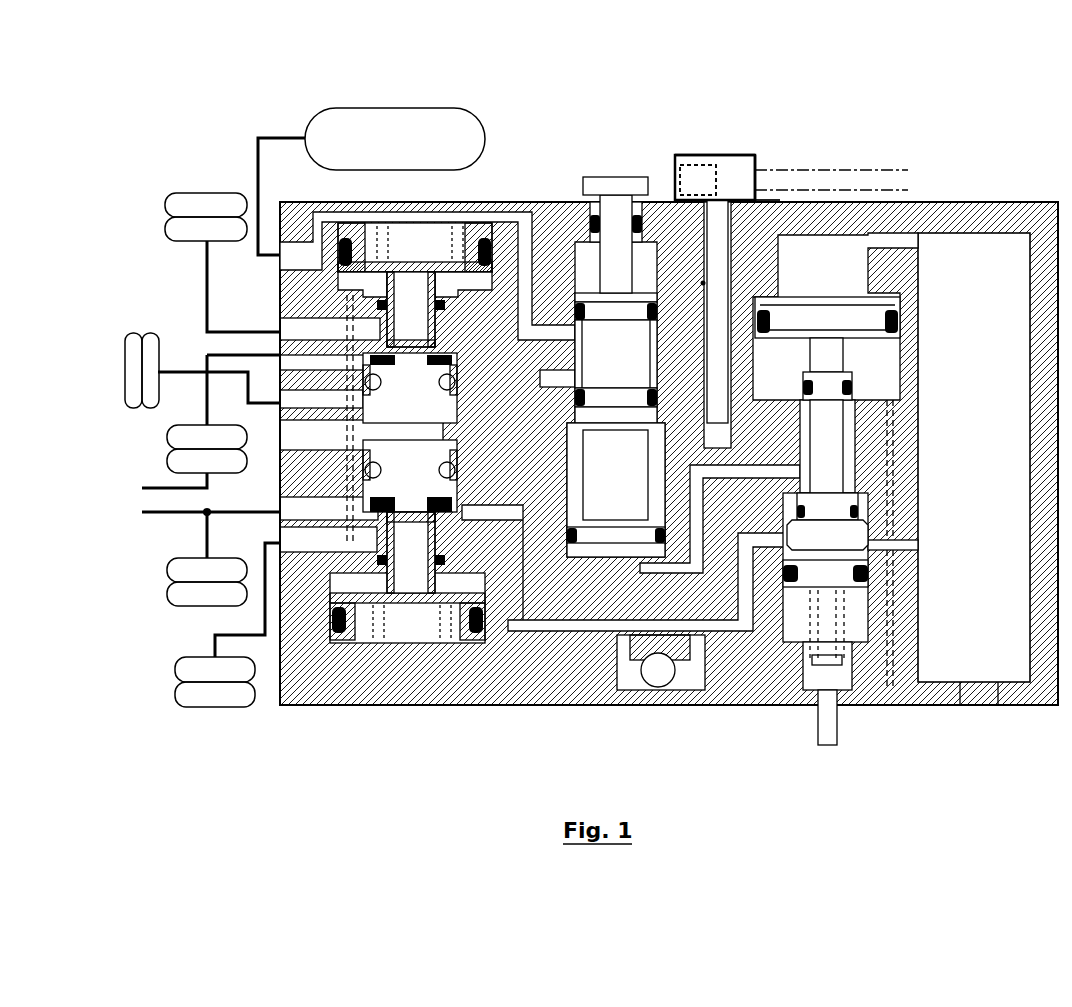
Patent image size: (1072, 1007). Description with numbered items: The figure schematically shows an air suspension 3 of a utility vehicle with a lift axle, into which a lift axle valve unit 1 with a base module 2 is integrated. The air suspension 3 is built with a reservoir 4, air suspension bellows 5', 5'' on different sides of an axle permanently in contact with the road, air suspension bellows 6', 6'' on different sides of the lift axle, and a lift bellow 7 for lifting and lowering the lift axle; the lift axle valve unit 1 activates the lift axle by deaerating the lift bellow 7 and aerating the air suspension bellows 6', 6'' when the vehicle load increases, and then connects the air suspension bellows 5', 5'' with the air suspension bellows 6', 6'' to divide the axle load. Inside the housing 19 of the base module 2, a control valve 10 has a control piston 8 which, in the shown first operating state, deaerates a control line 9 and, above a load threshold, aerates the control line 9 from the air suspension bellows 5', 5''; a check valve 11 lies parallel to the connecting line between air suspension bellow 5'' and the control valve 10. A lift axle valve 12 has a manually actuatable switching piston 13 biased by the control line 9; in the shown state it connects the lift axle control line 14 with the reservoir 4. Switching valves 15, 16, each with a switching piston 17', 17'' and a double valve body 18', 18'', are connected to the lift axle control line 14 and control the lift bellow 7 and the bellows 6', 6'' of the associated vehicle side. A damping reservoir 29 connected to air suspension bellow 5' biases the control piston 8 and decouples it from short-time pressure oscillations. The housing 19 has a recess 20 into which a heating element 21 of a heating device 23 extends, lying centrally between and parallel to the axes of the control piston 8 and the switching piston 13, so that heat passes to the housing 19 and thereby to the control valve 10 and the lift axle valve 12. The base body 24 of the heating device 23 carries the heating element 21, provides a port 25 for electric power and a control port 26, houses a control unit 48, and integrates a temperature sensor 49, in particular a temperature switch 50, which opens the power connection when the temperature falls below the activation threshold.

The lift axle valve unit 1 is at (955, 140).
The base module 2 is at (669, 453).
The air suspension 3 is at (207, 145).
The reservoir 4 is at (398, 149).
The air suspension bellow 5' is at (158, 582).
The air suspension bellow 5'' is at (158, 449).
The air suspension bellow 6' is at (162, 682).
The air suspension bellow 6'' is at (158, 217).
The lift bellow 7 is at (132, 372).
The control piston 8 is at (827, 357).
The control line 9 is at (695, 565).
The control valve 10 is at (868, 185).
The check valve 11 is at (656, 684).
The lift axle valve 12 is at (631, 140).
The switching piston 13 is at (610, 348).
The lift axle control line 14 is at (540, 383).
The switching valve 15 is at (411, 284).
The switching valve 16 is at (409, 592).
The switching piston 17' is at (407, 674).
The switching piston 17'' is at (429, 175).
The double valve body 18' is at (410, 476).
The double valve body 18'' is at (410, 388).
The housing 19 is at (1000, 205).
The recess 20 is at (703, 283).
The heating element 21 is at (806, 162).
The heating device 23 is at (757, 140).
The base body 24 is at (718, 245).
The port 25 is at (760, 203).
The control port 26 is at (773, 203).
The damping reservoir 29 is at (980, 447).
The control unit 48 is at (706, 190).
The temperature sensor 49 is at (718, 180).
The temperature switch 50 is at (698, 180).